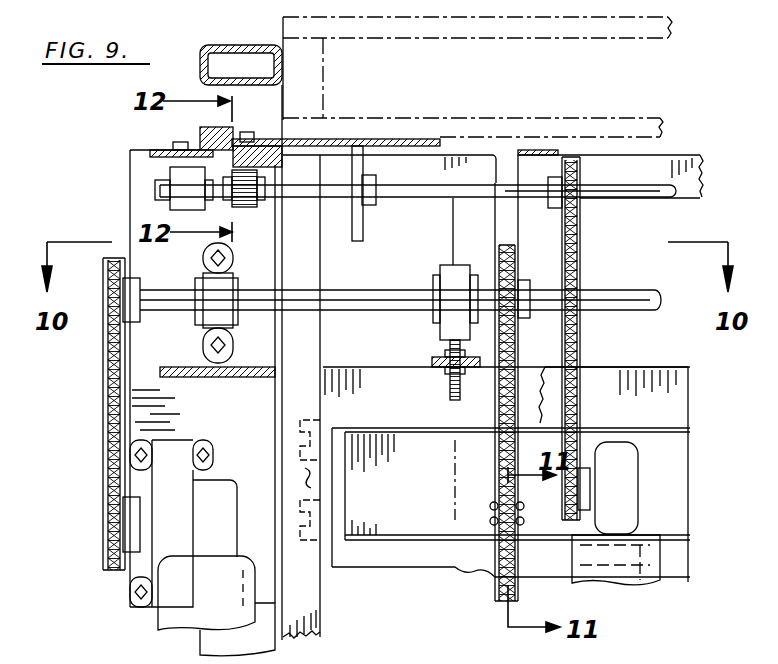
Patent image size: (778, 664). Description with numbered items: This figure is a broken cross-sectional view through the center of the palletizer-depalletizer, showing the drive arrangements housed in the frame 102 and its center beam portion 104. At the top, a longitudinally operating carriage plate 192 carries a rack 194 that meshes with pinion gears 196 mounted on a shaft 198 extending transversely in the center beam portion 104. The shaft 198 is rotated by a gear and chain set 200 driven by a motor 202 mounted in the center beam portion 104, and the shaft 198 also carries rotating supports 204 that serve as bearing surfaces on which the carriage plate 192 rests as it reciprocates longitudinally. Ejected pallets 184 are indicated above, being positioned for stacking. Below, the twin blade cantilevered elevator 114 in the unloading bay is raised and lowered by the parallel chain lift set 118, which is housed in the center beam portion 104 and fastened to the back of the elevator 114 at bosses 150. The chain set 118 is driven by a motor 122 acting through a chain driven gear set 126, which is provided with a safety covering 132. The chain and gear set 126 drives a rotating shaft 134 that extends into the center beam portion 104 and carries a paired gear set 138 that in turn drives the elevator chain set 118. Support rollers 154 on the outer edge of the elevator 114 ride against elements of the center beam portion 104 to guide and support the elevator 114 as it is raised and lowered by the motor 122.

The frame 102 is at (233, 45).
The center beam portion 104 is at (320, 600).
The twin blade cantilevered elevator 114 is at (688, 447).
The parallel double lift set 118 is at (495, 598).
The motor 122 is at (165, 612).
The chain driven gear set 126 is at (103, 378).
The safety covering 132 is at (130, 200).
The rotating shaft 134 is at (362, 293).
The paired gear set 138 is at (500, 247).
The bosses 150 is at (490, 506).
The support rollers 154 is at (306, 480).
The ejected pallets 184 is at (496, 38).
The carriage plate 192 is at (378, 139).
The rack 194 is at (230, 163).
The pinion gears 196 is at (248, 207).
The shaft 198 is at (615, 190).
The gear and chain set 200 is at (580, 258).
The motor 202 is at (632, 493).
The rotating supports 204 is at (365, 222).